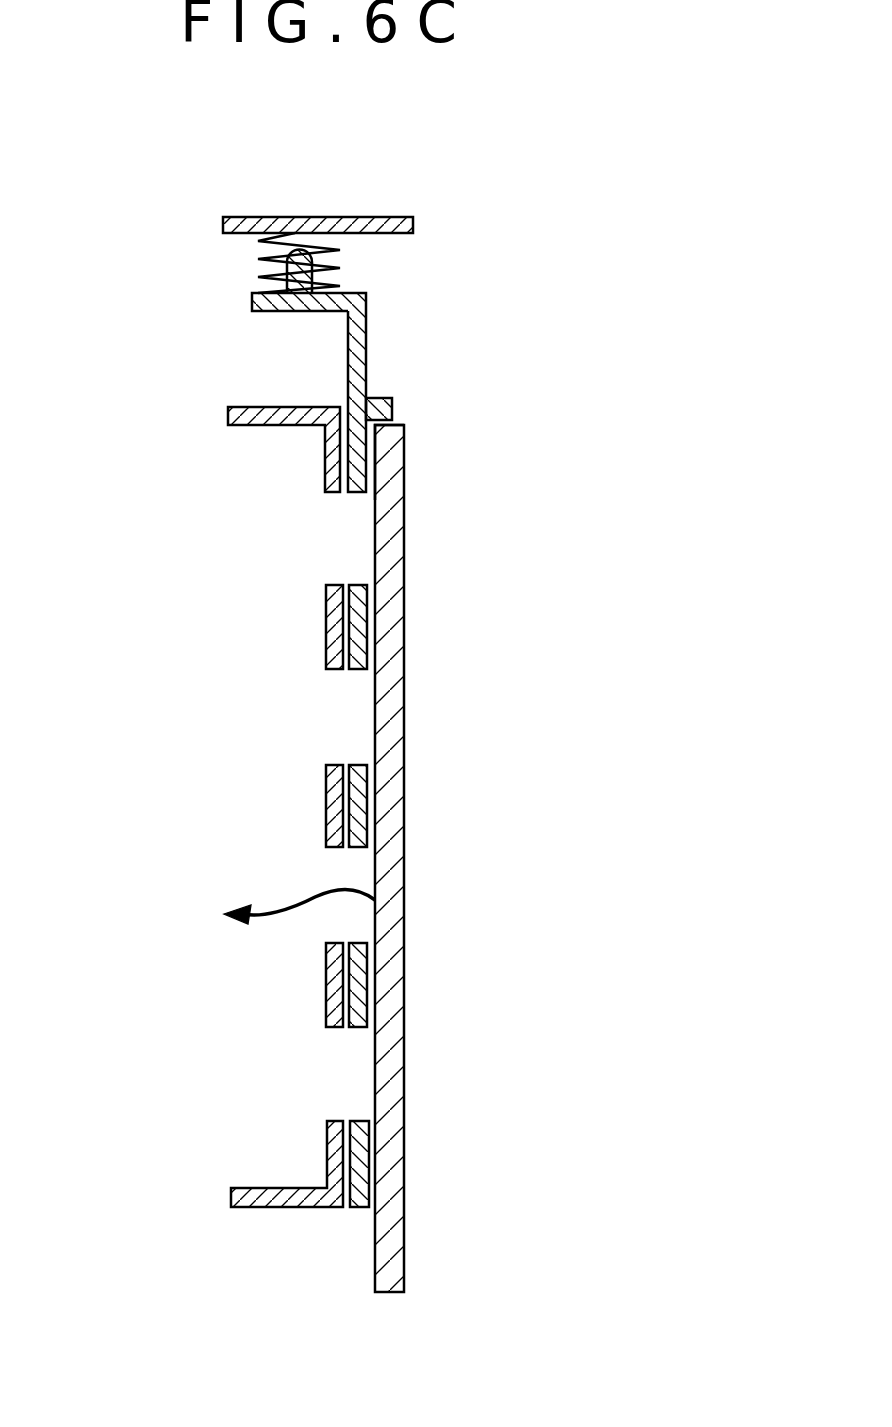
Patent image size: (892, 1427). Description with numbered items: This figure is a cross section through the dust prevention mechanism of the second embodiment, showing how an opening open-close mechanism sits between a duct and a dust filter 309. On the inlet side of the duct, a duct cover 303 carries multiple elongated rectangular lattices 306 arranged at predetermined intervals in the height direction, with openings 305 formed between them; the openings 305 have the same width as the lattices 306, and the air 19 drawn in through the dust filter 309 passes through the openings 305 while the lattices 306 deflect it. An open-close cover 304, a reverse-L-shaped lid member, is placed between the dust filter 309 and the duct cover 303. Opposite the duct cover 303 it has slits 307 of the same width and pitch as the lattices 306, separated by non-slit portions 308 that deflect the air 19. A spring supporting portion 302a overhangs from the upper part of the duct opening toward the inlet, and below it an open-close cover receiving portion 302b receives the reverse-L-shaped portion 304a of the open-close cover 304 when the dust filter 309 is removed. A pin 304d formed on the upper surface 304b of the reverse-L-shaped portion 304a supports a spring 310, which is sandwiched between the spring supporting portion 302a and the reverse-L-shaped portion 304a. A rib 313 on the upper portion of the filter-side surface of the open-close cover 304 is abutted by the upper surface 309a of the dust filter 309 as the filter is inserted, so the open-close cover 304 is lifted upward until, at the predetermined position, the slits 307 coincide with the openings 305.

The air 19 is at (282, 913).
The spring supporting portion 302a is at (350, 217).
The open-close cover receiving portion 302b is at (270, 407).
The duct cover 303 is at (320, 1207).
The open-close cover 304 is at (360, 1213).
The reverse-L-shaped portion 304a is at (252, 298).
The upper surface 304b is at (366, 303).
The pin 304d is at (343, 277).
The openings 305 is at (328, 723).
The lattices 306 is at (327, 813).
The slits 307 is at (360, 719).
The non-slit portions 308 is at (358, 804).
The dust filter 309 is at (404, 1150).
The upper surface of the dust filter 309a is at (404, 424).
The spring 310 is at (258, 259).
The rib 313 is at (395, 407).